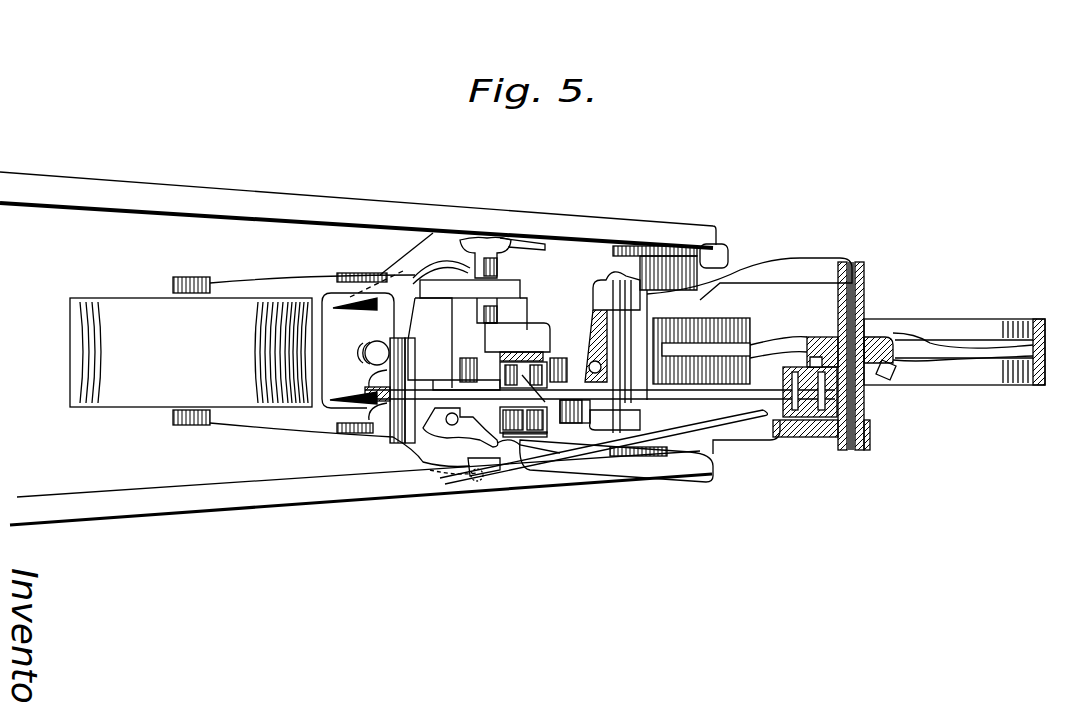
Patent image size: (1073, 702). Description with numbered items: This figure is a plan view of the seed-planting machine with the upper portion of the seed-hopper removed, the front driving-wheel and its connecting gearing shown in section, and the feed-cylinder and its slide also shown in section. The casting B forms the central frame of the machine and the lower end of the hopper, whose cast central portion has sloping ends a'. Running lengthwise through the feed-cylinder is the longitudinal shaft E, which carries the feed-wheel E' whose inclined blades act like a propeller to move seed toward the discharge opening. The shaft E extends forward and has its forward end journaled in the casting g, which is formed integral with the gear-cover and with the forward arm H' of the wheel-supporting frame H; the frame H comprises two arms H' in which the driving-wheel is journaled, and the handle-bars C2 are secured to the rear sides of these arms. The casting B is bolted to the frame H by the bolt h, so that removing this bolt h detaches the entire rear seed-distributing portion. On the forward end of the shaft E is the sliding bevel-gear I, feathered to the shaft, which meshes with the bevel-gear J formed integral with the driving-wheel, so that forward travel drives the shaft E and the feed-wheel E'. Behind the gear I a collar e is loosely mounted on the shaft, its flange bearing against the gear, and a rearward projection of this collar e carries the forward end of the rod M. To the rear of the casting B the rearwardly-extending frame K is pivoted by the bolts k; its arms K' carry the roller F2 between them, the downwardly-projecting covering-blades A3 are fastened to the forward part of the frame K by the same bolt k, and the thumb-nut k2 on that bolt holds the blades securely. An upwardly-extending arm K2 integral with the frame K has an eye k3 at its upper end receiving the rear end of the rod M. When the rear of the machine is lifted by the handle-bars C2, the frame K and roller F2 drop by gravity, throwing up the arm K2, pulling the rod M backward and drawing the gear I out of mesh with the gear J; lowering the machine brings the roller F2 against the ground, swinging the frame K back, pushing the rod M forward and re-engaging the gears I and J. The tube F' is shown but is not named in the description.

The handle-bars C2 is at (283, 520).
The roller F2 is at (80, 341).
The arms of frame K K' is at (321, 354).
The rearwardly-extending frame K is at (358, 356).
The upwardly-extending arm K2 is at (497, 463).
The longitudinal shaft E is at (600, 457).
The covering-blades A3 is at (410, 258).
The bolt k is at (488, 240).
The thumb-nut k2 is at (510, 240).
The casting forming the central frame B is at (523, 330).
The feed-wheel E' is at (535, 329).
The collar e is at (503, 392).
The bolt h is at (620, 275).
The wheel-supporting frame H is at (723, 328).
The arms of the wheel-supporting frame H' is at (695, 357).
The bevel-gear I is at (803, 367).
The casting g is at (830, 417).
The rod M is at (597, 447).
The sloping ends of the hopper a' is at (470, 477).
The eye k3 is at (447, 503).
The tube F' is at (954, 333).
The bevel-gear J is at (887, 377).